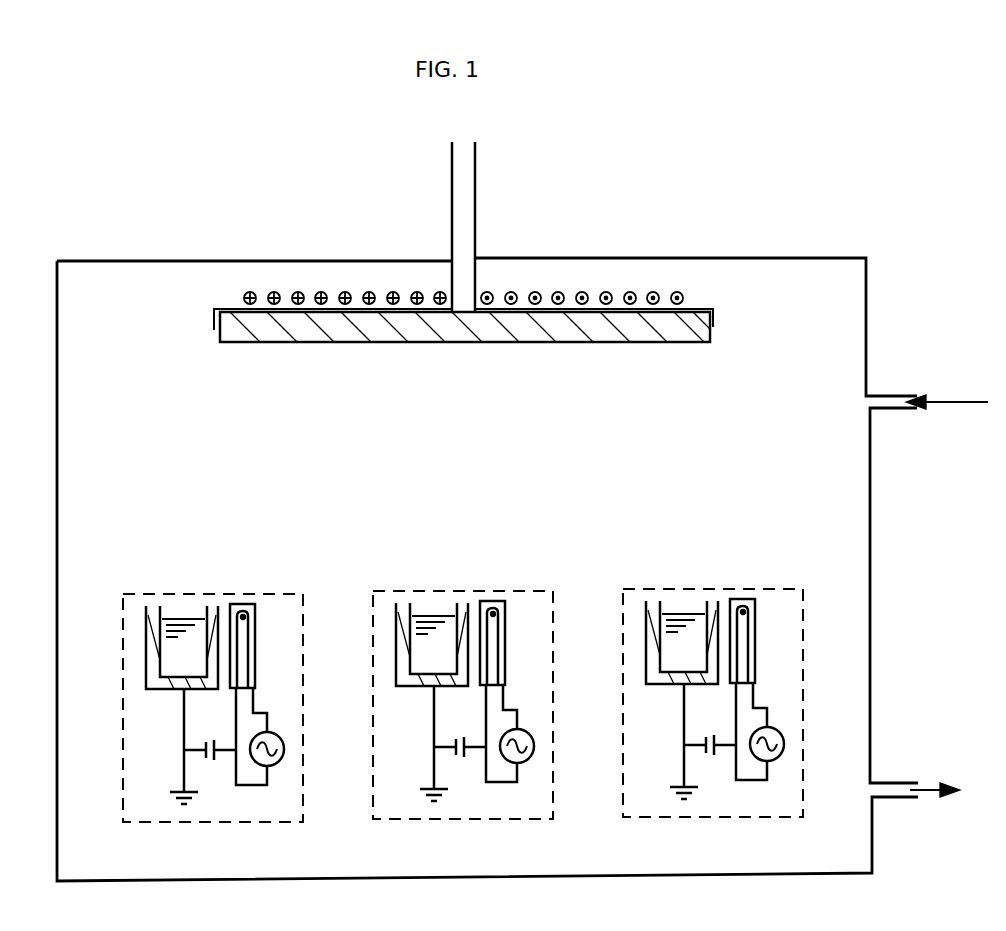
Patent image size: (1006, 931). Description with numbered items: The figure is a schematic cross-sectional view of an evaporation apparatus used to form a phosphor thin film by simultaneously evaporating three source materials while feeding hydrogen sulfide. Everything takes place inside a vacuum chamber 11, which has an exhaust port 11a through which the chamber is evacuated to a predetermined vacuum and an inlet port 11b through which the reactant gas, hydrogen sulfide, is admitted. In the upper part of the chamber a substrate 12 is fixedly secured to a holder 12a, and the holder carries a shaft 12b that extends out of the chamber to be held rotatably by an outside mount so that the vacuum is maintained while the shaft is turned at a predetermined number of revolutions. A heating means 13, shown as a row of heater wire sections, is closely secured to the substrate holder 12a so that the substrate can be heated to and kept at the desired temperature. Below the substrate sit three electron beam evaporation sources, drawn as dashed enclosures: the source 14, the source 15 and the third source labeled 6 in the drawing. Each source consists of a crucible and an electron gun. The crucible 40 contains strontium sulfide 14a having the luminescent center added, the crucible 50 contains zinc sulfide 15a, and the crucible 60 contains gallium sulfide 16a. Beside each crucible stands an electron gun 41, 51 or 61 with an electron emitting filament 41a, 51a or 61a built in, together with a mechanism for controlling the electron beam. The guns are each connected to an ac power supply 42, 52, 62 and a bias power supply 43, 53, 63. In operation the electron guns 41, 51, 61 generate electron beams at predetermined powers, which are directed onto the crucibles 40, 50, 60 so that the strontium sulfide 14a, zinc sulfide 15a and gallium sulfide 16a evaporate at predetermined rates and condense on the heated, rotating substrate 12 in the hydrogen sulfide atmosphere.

The vacuum chamber 11 is at (665, 257).
The exhaust port 11a is at (885, 798).
The inlet port 11b is at (883, 395).
The substrate 12 is at (490, 335).
The holder 12a is at (713, 315).
The shaft 12b is at (476, 190).
The heating means 13 is at (565, 292).
The electron beam evaporation source 14 is at (713, 667).
The strontium sulfide 14a is at (668, 581).
The electron beam evaporation source 15 is at (463, 669).
The zinc sulfide 15a is at (418, 583).
The evaporation source 6 is at (190, 594).
The gallium sulfide 16a is at (175, 619).
The crucible 40 is at (676, 700).
The electron gun 41 is at (785, 678).
The electron emitting filament 41a is at (797, 631).
The ac power supply 42 is at (796, 744).
The bias power supply 43 is at (721, 795).
The crucible 50 is at (426, 702).
The electron gun 51 is at (535, 680).
The electron emitting filament 51a is at (547, 633).
The ac power supply 52 is at (546, 746).
The bias power supply 53 is at (471, 797).
The crucible 60 is at (150, 690).
The electron gun 61 is at (255, 606).
The electron emitting filament 61a is at (248, 623).
The ac power supply 62 is at (284, 749).
The bias power supply 63 is at (218, 760).